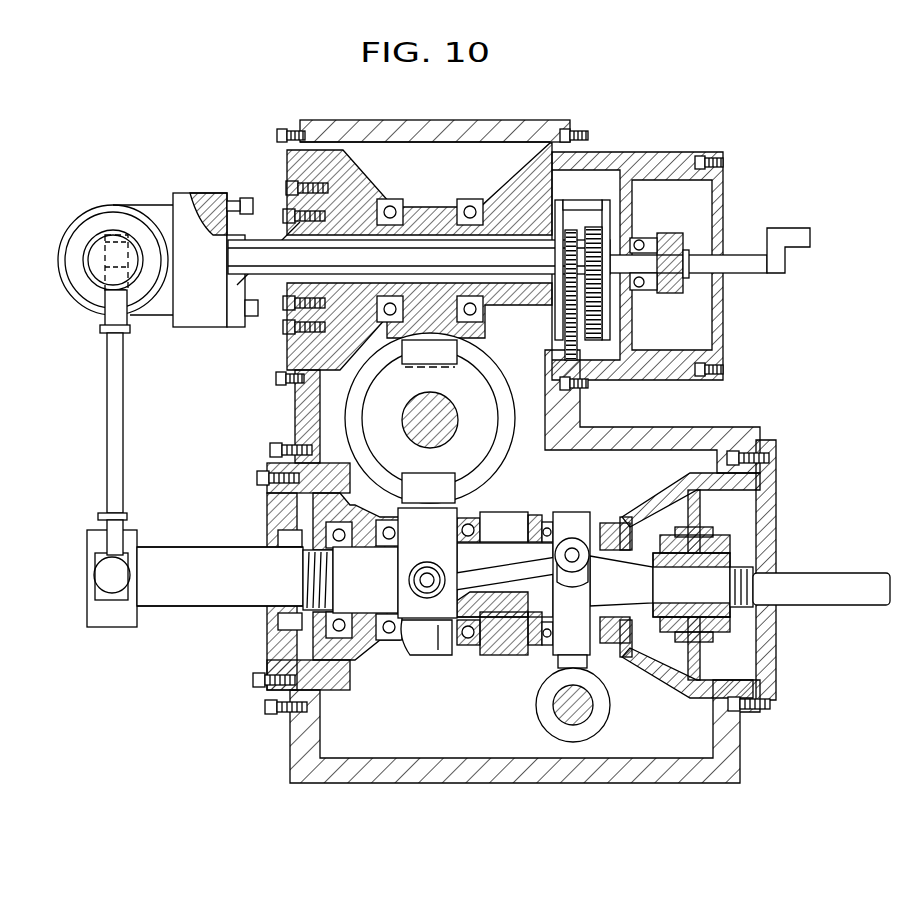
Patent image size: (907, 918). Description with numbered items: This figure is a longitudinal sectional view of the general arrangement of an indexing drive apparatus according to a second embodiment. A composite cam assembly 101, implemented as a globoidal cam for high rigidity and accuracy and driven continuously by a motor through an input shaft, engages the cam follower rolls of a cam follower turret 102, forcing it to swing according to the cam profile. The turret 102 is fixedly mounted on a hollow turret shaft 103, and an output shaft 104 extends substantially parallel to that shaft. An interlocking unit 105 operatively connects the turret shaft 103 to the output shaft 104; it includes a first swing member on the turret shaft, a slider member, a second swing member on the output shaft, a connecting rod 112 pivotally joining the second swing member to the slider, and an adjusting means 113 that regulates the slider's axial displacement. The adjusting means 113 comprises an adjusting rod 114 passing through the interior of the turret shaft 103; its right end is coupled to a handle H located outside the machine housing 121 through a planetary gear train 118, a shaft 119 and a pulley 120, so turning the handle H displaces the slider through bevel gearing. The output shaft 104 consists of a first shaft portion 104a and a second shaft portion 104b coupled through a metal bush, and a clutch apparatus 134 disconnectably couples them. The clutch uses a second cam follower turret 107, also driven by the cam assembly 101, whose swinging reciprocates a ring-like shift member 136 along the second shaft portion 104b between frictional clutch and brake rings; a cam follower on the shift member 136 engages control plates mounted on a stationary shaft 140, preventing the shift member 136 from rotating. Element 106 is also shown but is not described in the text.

The composite cam assembly 101 is at (522, 411).
The cam follower turret 102 is at (453, 328).
The turret shaft 103 is at (262, 238).
The output shaft 104 is at (228, 616).
The first shaft portion 104a is at (215, 559).
The second shaft portion 104b is at (610, 574).
The interlocking unit 105 is at (137, 180).
The eccentric pin 106 is at (448, 431).
The second cam follower turret 107 is at (404, 648).
The connecting rod 112 is at (122, 458).
The adjusting means 113 is at (452, 201).
The adjusting rod 114 is at (417, 262).
The gear set 118 is at (602, 189).
The shaft 119 is at (650, 290).
The pulley 120 is at (672, 234).
The machine housing 121 is at (508, 131).
The clutch apparatus 134 is at (488, 671).
The ring-like shift member 136 is at (578, 519).
The stationary shaft 140 is at (588, 708).
The handle H is at (795, 228).